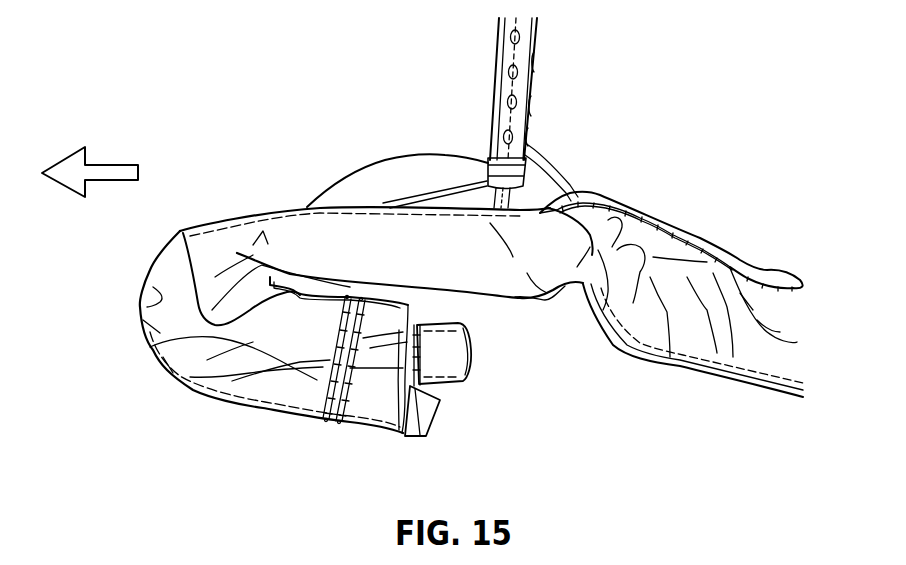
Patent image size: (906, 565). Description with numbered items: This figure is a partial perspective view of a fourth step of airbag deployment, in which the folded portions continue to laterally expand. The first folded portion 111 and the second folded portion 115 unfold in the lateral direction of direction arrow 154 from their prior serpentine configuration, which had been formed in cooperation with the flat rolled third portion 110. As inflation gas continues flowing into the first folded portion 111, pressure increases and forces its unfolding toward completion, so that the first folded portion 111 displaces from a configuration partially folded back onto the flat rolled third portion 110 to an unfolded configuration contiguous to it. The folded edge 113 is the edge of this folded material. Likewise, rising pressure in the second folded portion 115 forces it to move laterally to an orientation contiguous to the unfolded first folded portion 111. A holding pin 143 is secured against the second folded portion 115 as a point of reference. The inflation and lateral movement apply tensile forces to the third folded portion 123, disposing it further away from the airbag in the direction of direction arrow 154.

The flat rolled third portion 110 is at (532, 297).
The first folded portion 111 is at (393, 237).
The folded edge 113 is at (463, 382).
The second folded portion 115 is at (259, 232).
The third folded portion 123 is at (273, 412).
The holding pin 143 is at (532, 60).
The direction arrow 154 is at (110, 181).